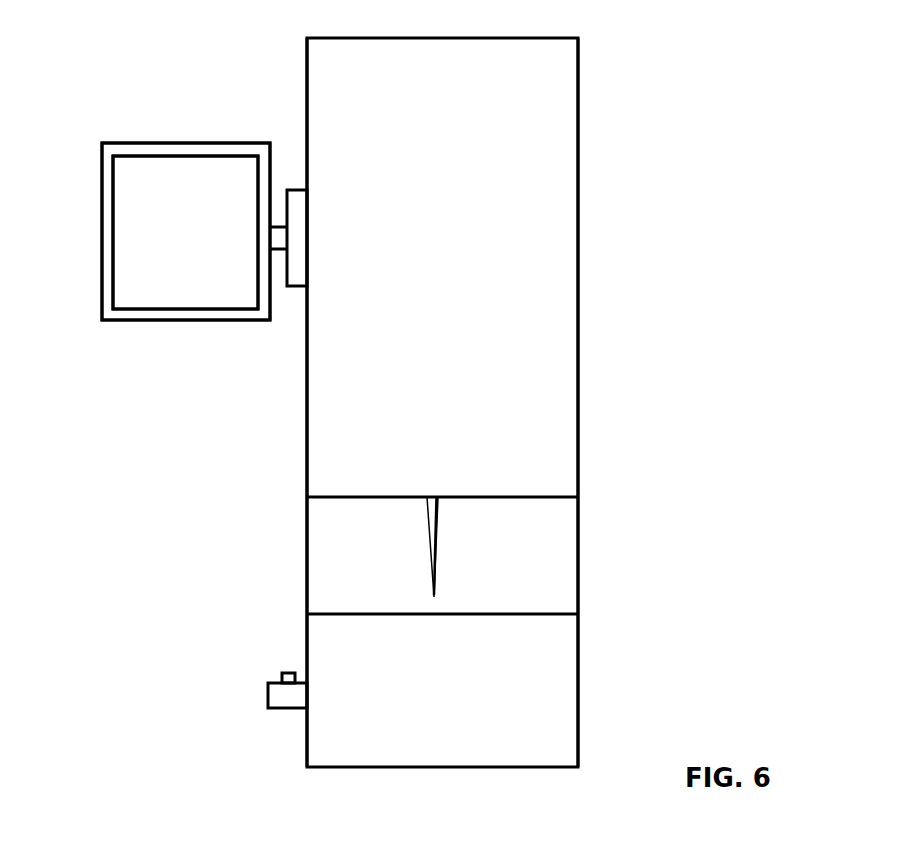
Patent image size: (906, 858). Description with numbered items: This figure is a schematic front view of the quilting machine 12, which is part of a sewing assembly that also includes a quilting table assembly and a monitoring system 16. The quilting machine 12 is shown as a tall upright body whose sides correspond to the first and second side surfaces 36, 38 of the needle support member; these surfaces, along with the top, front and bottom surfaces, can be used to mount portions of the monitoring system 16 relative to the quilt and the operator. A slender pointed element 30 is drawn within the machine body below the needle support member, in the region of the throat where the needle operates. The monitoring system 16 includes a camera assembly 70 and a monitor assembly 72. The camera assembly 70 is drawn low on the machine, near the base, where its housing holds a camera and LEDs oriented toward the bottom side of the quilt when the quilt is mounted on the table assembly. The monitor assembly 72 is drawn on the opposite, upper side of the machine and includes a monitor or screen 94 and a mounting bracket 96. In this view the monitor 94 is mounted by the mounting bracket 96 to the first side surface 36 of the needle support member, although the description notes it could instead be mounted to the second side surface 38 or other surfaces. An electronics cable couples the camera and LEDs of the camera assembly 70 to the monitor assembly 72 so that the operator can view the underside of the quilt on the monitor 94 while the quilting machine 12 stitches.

The quilting machine 12 is at (590, 100).
The monitoring system 16 is at (92, 123).
The sensor probe 30 is at (440, 521).
The first side surface 36 is at (307, 442).
The second side surface 38 is at (578, 332).
The camera assembly 70 is at (273, 719).
The monitor assembly 72 is at (176, 330).
The monitor 94 is at (137, 277).
The mounting bracket 96 is at (277, 252).